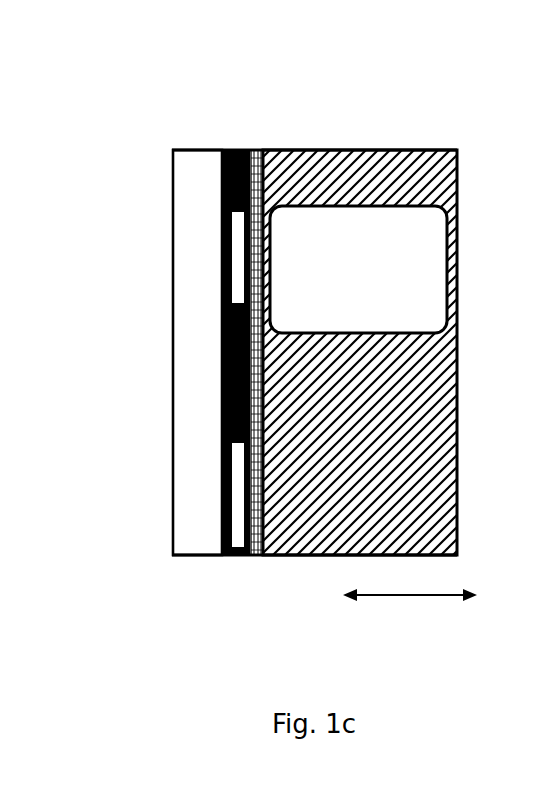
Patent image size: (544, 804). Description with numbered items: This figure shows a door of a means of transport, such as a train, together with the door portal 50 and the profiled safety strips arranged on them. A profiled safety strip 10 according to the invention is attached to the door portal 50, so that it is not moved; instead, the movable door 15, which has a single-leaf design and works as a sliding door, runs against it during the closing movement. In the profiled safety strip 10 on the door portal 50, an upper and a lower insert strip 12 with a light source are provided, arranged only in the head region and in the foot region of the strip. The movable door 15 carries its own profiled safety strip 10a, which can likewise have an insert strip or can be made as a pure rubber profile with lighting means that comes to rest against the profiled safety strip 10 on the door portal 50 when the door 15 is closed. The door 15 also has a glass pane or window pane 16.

The door portal 50 is at (195, 182).
The profiled safety strip 10 is at (237, 557).
The insert strip 12 is at (240, 246).
The profiled safety strip 10a is at (258, 557).
The door 15 is at (370, 180).
The window pane 16 is at (327, 232).